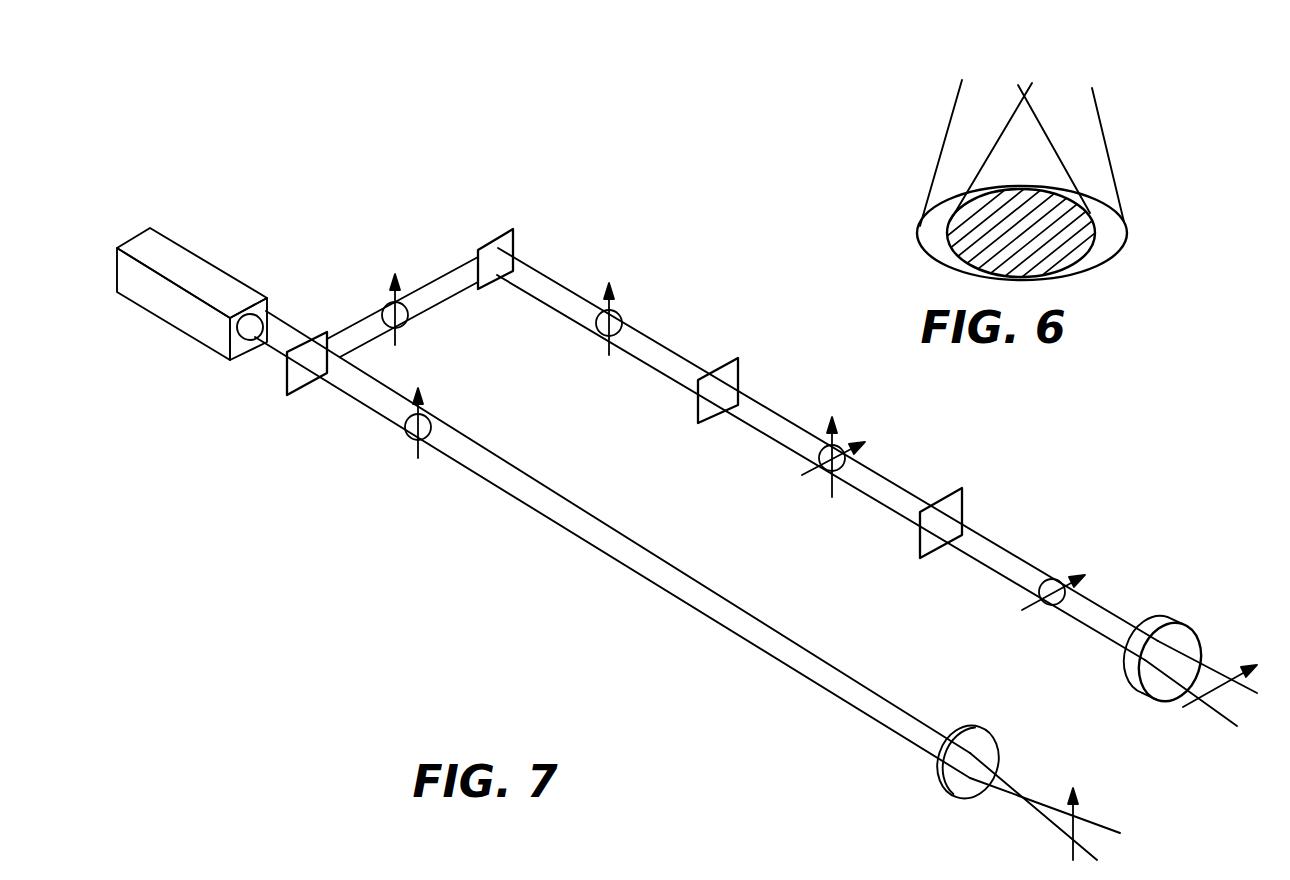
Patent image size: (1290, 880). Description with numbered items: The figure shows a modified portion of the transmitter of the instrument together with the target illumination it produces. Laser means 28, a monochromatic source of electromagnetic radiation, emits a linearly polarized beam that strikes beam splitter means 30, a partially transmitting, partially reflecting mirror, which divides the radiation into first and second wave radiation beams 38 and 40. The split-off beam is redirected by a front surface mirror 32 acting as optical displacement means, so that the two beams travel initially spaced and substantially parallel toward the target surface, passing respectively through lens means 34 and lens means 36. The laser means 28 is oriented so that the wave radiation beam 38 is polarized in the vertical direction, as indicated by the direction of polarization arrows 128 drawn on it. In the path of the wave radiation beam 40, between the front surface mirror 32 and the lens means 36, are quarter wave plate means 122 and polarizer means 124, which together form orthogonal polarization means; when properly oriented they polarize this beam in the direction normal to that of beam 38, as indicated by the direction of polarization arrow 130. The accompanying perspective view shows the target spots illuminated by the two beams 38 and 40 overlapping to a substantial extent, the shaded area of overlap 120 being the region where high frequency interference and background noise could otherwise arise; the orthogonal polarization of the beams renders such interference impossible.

In FIG. 7, the laser means 28 is at (192, 291).
In FIG. 7, the beam splitter means 30 is at (303, 384).
In FIG. 7, the front surface mirror 32 is at (499, 235).
In FIG. 7, the lens means 34 is at (974, 744).
In FIG. 7, the lens means 36 is at (1162, 641).
In FIG. 7, the wave radiation beam 38 is at (699, 585).
In FIG. 6, the wave radiation beam 38 is at (1007, 180).
In FIG. 7, the wave radiation beam 40 is at (792, 498).
In FIG. 6, the wave radiation beam 40 is at (1125, 155).
In FIG. 6, the area of overlap 120 is at (1041, 188).
In FIG. 7, the quarter wave plate means 122 is at (742, 376).
In FIG. 7, the polarizer means 124 is at (965, 509).
In FIG. 7, the direction of polarization arrows 128 is at (748, 546).
In FIG. 7, the direction of polarization arrow 130 is at (1039, 554).